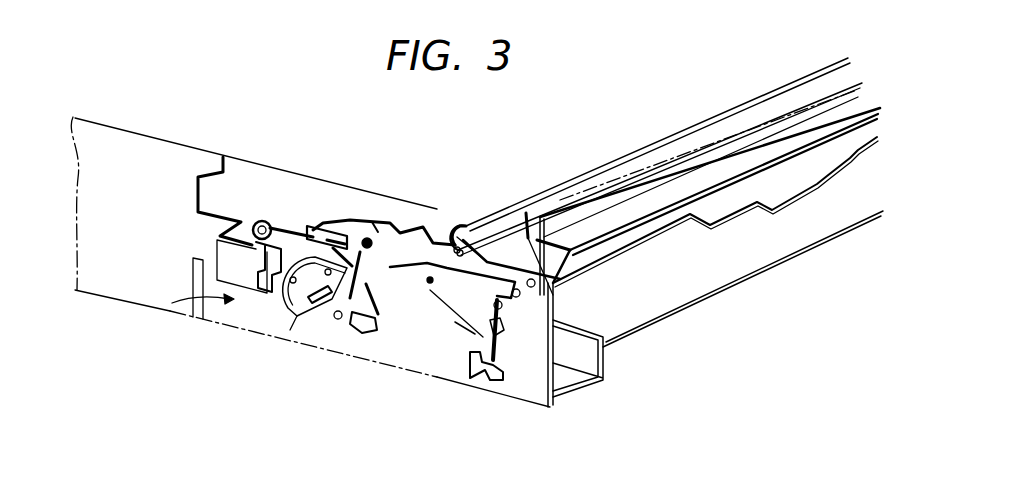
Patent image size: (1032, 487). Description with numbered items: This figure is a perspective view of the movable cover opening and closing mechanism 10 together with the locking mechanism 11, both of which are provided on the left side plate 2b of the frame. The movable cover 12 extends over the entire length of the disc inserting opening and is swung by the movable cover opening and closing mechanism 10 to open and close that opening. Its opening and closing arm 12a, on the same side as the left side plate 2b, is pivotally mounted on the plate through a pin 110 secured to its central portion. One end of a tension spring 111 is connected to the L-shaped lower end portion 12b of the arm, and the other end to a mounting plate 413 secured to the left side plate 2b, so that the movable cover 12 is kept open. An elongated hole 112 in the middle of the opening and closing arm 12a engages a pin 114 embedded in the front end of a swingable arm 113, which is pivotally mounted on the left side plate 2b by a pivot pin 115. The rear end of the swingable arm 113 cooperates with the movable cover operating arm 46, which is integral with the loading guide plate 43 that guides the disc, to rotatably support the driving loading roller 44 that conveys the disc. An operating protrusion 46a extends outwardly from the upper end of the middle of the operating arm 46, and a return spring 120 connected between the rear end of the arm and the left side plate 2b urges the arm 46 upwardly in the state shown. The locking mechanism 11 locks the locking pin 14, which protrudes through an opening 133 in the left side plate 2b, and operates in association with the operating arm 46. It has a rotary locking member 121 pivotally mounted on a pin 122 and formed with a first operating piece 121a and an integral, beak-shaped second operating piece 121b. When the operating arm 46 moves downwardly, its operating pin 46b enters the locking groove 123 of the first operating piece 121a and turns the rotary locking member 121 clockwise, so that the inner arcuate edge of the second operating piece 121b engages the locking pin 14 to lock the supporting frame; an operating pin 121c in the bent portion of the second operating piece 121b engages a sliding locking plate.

The left side plate 2b is at (534, 382).
The movable cover opening and closing mechanism 10 is at (380, 337).
The locking mechanism 11 is at (177, 300).
The movable cover 12 is at (627, 214).
The opening and closing arm 12a is at (546, 255).
The L-shaped lower end portion 12b is at (465, 327).
The locking pin 14 is at (323, 283).
The loading guide plate 43 is at (787, 188).
The driving loading roller 44 is at (679, 153).
The movable cover operating arm 46 is at (470, 311).
The operating protrusion 46a is at (420, 220).
The operating pin 46b is at (372, 213).
The pin 110 is at (552, 285).
The tension spring 111 is at (507, 360).
The elongated hole 112 is at (527, 212).
The swingable arm 113 is at (460, 220).
The pin 114 is at (470, 272).
The pivot pin 115 is at (429, 283).
The return spring 120 is at (268, 221).
The rotary locking member 121 is at (343, 327).
The first operating piece 121a is at (340, 238).
The second operating piece 121b is at (300, 277).
The operating pin 121c is at (320, 224).
The pin 122 is at (391, 222).
The locking groove 123 is at (323, 313).
The opening 133 is at (222, 262).
The mounting plate 413 is at (477, 377).